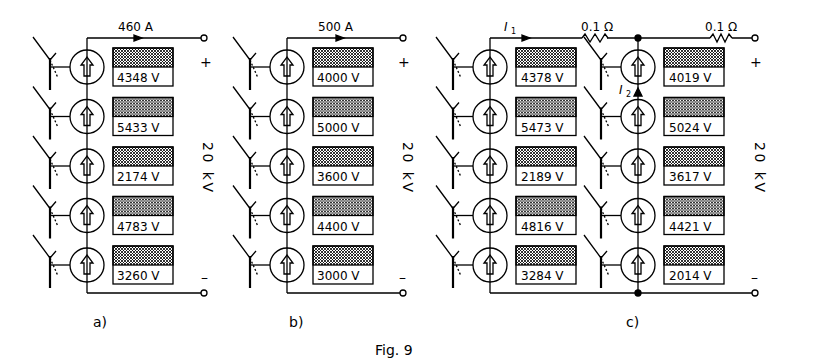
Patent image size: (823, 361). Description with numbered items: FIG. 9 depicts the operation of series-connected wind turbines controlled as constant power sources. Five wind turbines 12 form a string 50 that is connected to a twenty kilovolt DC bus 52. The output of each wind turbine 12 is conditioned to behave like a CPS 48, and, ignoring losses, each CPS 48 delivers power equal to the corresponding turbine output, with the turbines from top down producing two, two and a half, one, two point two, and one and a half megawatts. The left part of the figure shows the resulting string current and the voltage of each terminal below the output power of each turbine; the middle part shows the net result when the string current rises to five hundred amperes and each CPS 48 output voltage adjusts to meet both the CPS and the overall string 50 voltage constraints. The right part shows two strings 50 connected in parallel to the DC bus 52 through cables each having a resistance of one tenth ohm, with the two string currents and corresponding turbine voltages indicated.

The wind turbine 12 is at (49, 56).
The CPS 48 is at (84, 52).
The string 50 is at (40, 174).
The DC bus 52 is at (207, 35).